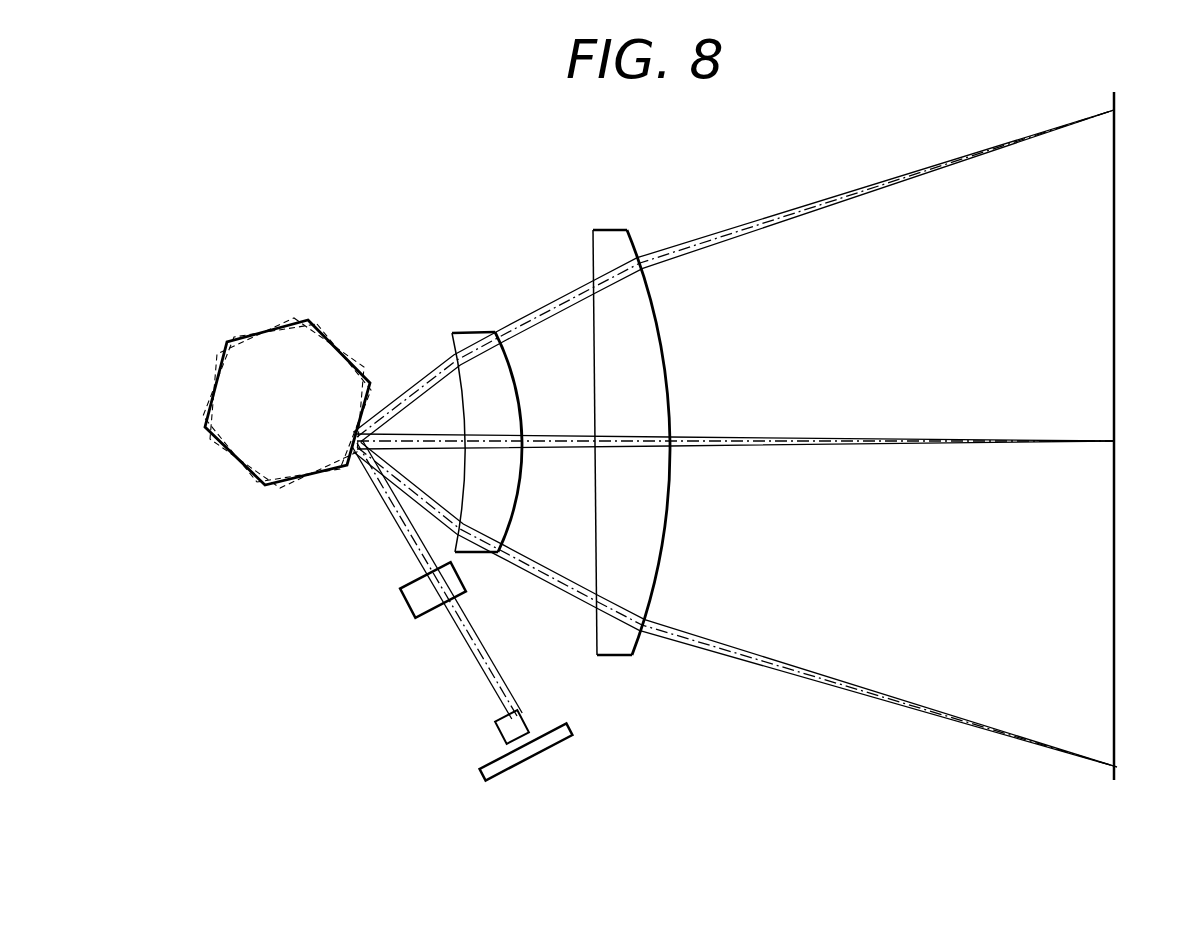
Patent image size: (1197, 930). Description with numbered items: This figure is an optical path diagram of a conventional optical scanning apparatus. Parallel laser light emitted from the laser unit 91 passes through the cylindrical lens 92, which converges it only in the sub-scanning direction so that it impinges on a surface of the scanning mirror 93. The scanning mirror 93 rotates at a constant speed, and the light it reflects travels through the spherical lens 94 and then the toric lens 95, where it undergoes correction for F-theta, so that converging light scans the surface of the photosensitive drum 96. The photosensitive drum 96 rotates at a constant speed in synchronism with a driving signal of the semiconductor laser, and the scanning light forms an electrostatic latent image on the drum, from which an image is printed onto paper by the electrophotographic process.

The laser unit 91 is at (525, 732).
The cylindrical lens 92 is at (398, 602).
The scanning mirror 93 is at (318, 348).
The spherical lens 94 is at (472, 336).
The toric lens 95 is at (612, 236).
The photosensitive drum 96 is at (1116, 166).